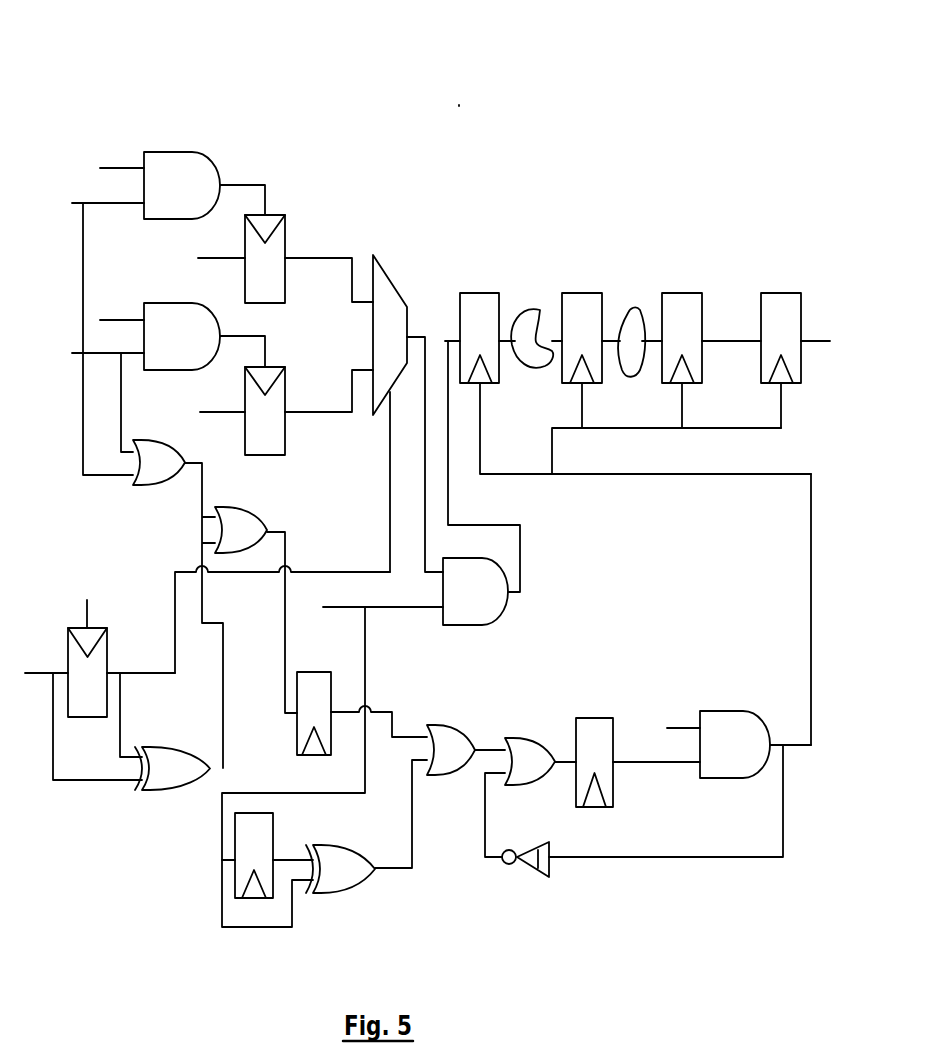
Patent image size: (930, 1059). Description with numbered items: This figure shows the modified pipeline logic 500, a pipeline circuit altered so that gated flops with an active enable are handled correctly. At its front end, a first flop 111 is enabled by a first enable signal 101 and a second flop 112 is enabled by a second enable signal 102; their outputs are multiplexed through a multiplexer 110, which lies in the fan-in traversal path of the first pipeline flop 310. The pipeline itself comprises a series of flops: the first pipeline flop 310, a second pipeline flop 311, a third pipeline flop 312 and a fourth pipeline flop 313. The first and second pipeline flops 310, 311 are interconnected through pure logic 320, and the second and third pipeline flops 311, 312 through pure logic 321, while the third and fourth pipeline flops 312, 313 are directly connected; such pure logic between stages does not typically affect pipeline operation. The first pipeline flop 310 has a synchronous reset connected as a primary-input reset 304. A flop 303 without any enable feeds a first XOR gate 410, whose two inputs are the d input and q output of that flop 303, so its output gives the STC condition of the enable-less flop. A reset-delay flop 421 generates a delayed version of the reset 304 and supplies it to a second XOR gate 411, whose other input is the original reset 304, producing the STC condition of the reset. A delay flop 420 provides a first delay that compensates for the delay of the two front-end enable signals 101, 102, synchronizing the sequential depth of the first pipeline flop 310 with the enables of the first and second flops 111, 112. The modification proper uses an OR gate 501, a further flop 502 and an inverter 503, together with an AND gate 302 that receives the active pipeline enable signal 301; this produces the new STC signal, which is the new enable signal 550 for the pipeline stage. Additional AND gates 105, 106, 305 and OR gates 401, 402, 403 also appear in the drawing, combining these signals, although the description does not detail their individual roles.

The enable EN1 101 is at (45, 185).
The enable EN2 102 is at (45, 332).
The AND gate 1 105 is at (182, 152).
The AND gate 2 106 is at (202, 305).
The multiplexer 110 is at (393, 277).
The flop FF1 111 is at (285, 215).
The flop FF2 112 is at (285, 367).
The enable EN4 301 is at (647, 705).
The AND gate AND5 302 is at (752, 711).
The flop FF3 303 is at (70, 642).
The reset 304 is at (407, 590).
The AND gate 4 305 is at (465, 625).
The flop FF4-1 310 is at (480, 293).
The flop FF4-2 311 is at (580, 293).
The flop FF4-3 312 is at (672, 293).
The flop FF4-4 313 is at (777, 293).
The logic 320 is at (538, 330).
The logic 321 is at (628, 313).
The OR gate 1 401 is at (180, 443).
The OR gate 2 402 is at (230, 507).
The OR gate 3 403 is at (433, 725).
The XOR gate XOR1 410 is at (172, 790).
The XOR gate XOR2 411 is at (325, 893).
The flop FF6 420 is at (322, 672).
The flop FF5 421 is at (273, 830).
The modified pipeline logic 500 is at (459, 105).
The OR gate OR4 501 is at (512, 738).
The flop FF7 502 is at (613, 783).
The inverter I 503 is at (535, 877).
The New_enable_FF4-1 signal 550 is at (811, 610).